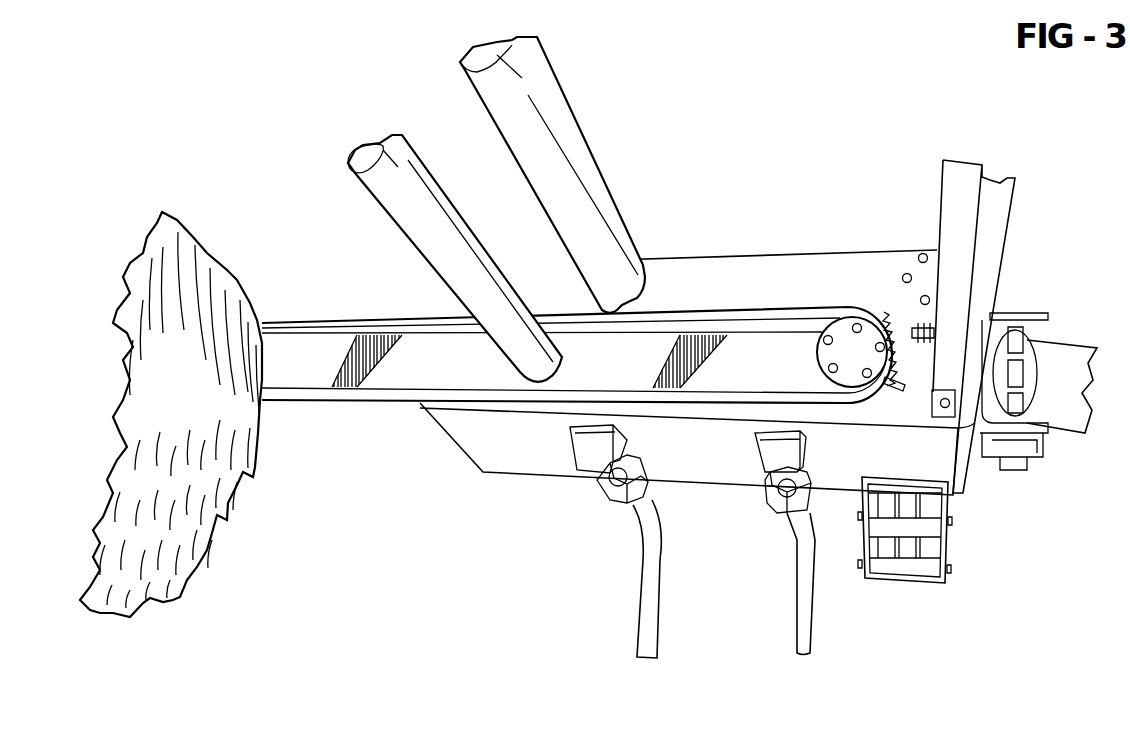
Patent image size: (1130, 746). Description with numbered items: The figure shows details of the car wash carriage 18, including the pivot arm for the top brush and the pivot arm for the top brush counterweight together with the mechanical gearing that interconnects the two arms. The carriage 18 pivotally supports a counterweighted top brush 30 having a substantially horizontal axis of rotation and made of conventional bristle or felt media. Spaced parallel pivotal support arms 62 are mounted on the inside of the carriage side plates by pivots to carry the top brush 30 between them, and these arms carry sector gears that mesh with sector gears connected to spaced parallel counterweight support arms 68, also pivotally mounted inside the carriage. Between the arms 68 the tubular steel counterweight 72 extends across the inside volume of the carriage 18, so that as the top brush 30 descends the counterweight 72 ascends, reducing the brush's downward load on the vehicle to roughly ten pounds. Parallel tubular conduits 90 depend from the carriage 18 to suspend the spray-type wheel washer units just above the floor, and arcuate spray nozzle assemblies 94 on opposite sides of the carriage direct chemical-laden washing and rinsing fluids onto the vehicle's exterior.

The carriage 18 is at (510, 480).
The top brush 30 is at (260, 446).
The pivotal support arms 62 is at (347, 326).
The counterweight support arms 68 is at (831, 252).
The counterweight 72 is at (583, 130).
The tubular conduits 90 is at (792, 557).
The arcuate spray nozzle assemblies 94 is at (946, 551).